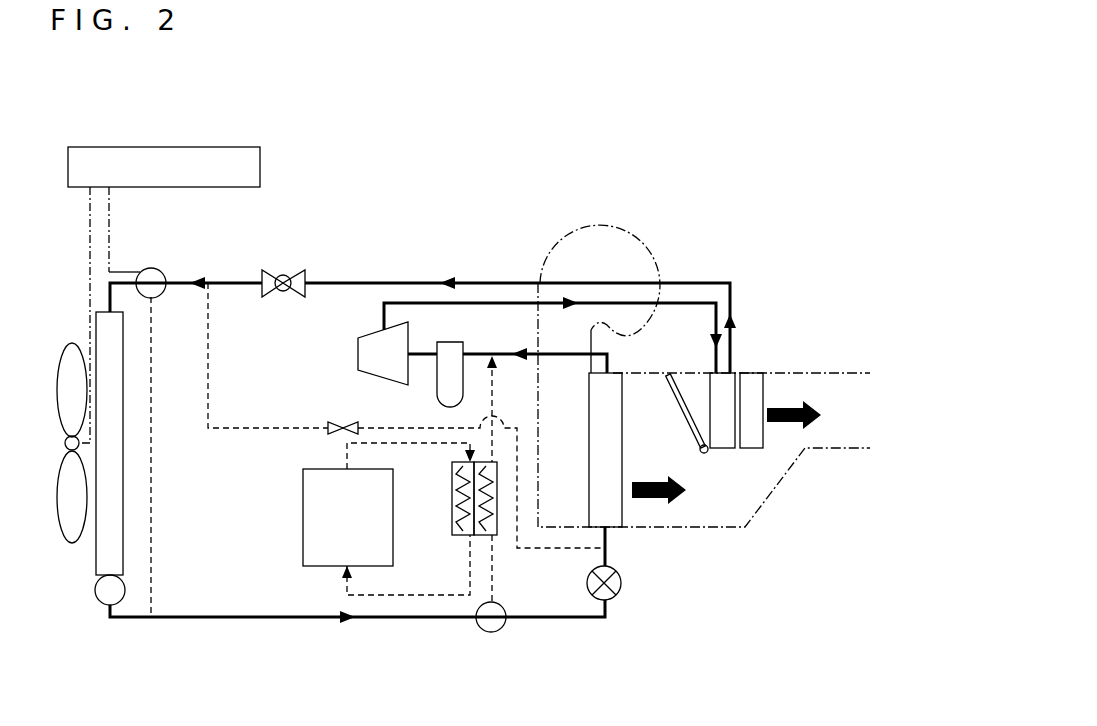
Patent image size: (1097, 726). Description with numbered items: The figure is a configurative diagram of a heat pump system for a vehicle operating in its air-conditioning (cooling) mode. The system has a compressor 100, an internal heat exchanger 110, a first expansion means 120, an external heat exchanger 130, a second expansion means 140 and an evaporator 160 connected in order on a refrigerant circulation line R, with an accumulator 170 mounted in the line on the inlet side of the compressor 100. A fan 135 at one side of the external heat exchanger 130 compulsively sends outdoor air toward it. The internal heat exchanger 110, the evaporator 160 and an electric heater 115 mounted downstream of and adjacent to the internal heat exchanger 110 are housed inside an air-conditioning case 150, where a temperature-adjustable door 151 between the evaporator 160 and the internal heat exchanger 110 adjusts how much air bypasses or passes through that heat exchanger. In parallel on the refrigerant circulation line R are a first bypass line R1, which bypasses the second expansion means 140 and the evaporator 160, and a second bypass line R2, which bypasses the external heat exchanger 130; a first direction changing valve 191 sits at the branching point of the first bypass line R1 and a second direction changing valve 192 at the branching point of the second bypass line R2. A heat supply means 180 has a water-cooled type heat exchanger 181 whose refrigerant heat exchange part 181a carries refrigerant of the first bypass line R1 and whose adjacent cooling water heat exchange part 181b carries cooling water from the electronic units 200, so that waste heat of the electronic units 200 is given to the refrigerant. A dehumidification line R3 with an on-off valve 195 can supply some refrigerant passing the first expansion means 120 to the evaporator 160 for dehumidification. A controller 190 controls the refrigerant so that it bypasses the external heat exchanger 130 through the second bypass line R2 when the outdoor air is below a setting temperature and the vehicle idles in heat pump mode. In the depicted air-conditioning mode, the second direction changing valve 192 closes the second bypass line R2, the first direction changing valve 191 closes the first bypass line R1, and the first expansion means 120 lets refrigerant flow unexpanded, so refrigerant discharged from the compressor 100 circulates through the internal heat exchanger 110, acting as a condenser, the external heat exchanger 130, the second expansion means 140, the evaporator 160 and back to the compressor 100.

The compressor 100 is at (358, 353).
The internal heat exchanger 110 is at (728, 449).
The electric heater 115 is at (749, 449).
The first expansion means 120 is at (281, 298).
The external heat exchanger 130 is at (95, 577).
The fan 135 is at (75, 352).
The second expansion means 140 is at (621, 584).
The air-conditioning case 150 is at (803, 455).
The temperature-adjustable door 151 is at (690, 400).
The evaporator 160 is at (622, 512).
The accumulator 170 is at (453, 341).
The heat supply means 180 is at (450, 505).
The water-cooled type heat exchanger 181 is at (426, 585).
The refrigerant heat exchange part 181a is at (482, 536).
The cooling water heat exchange part 181b is at (459, 536).
The controller 190 is at (112, 147).
The first direction changing valve 191 is at (491, 633).
The second direction changing valve 192 is at (145, 268).
The on-off valve 195 is at (327, 428).
The electronic units 200 is at (348, 517).
The refrigerant circulation line R is at (477, 278).
The first bypass line R1 is at (492, 583).
The second bypass line R2 is at (151, 597).
The dehumidification line R3 is at (208, 333).